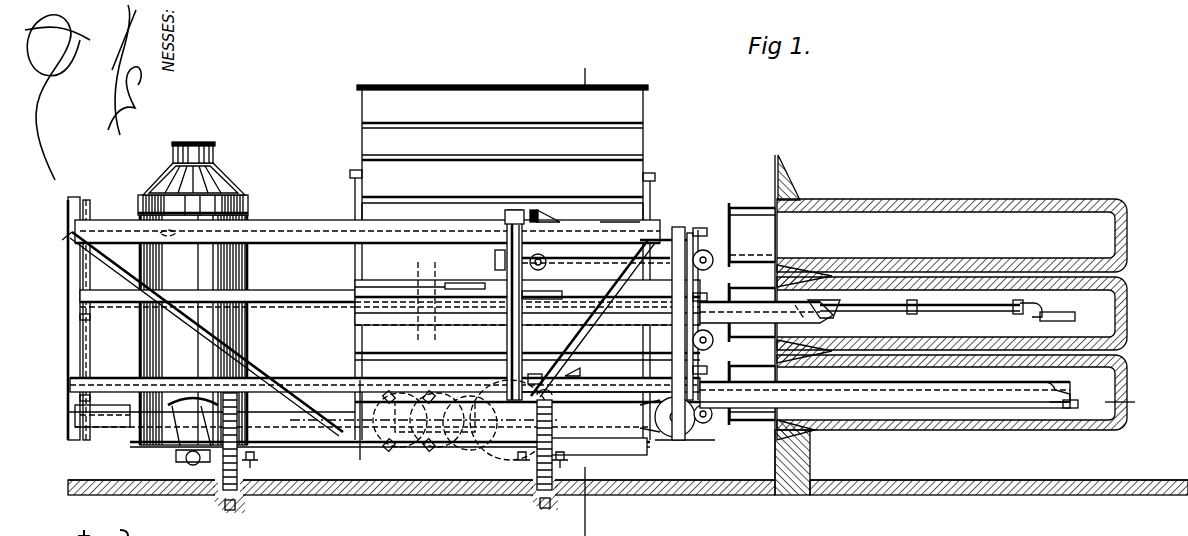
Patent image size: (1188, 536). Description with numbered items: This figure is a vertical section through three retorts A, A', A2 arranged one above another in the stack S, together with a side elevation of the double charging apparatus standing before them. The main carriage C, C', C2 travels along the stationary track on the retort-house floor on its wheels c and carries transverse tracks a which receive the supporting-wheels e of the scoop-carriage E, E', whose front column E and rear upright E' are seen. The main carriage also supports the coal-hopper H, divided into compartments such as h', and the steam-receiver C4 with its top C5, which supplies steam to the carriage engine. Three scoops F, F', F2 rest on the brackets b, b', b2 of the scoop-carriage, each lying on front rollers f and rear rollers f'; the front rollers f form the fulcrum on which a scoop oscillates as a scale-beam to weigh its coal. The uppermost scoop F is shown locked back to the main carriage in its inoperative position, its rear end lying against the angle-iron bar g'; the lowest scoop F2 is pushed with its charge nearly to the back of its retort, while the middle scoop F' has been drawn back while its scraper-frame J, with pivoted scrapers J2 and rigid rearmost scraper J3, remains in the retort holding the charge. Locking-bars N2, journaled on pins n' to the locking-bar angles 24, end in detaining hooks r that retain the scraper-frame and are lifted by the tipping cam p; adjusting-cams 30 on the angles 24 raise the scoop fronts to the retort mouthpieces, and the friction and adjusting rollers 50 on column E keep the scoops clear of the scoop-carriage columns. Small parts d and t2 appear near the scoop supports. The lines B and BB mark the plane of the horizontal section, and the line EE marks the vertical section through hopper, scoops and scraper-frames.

The retort pipe A is at (952, 243).
The second retort pipe A' is at (952, 320).
The third retort pipe A2 is at (952, 397).
The section line B B is at (387, 511).
The section line B B BB is at (940, 314).
The main carriage C is at (368, 335).
The main carriage C' is at (206, 334).
The main carriage C2 is at (68, 292).
The steam-receiver C4 is at (226, 178).
The hopper neck C5 is at (214, 145).
The scoop-carriage column E is at (597, 305).
The scoop-carriage upright E' is at (495, 260).
The section line E E EE is at (597, 301).
The scoop F is at (674, 321).
The scoop F' is at (766, 312).
The scoop F2 is at (889, 395).
The coal-hopper H is at (652, 108).
The scraper-frame J is at (947, 316).
The scrapers J2 is at (965, 316).
The rearmost scraper J3 is at (818, 306).
The furnace wall S is at (628, 334).
The tracks a is at (663, 447).
The bracket b is at (596, 263).
The bracket b' is at (573, 322).
The bracket b2 is at (596, 384).
The gear wheel c is at (368, 440).
The block d is at (540, 382).
The supporting-wheels e is at (503, 426).
The front roller f is at (707, 335).
The rear roller f' is at (544, 263).
The angle-iron bar g' is at (74, 321).
The hopper compartment h' is at (591, 374).
The unlocking cam p is at (385, 318).
The pins n' is at (484, 215).
The locking-bars N2 is at (432, 226).
The rod r is at (565, 217).
The tie t2 is at (620, 217).
The locking-bar angles 24 is at (385, 335).
The adjusting-cams 30 is at (367, 274).
The friction and adjusting rollers 50 is at (707, 294).